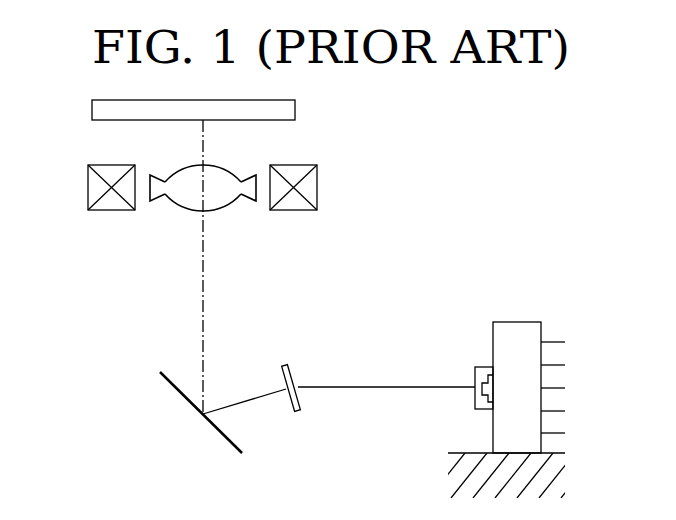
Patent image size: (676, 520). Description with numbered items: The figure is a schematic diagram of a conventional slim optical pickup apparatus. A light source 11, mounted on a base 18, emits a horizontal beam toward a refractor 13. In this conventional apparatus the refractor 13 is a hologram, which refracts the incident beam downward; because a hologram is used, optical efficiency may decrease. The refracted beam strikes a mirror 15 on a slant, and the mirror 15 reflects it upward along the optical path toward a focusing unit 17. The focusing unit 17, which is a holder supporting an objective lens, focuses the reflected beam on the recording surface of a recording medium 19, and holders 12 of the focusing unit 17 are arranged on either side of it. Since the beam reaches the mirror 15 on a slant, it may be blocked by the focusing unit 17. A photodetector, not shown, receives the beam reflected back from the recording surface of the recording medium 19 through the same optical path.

The light source 11 is at (518, 322).
The holders 12 is at (88, 187).
The refractor 13 is at (293, 372).
The mirror 15 is at (191, 408).
The focusing unit 17 is at (222, 168).
The base 18 is at (478, 460).
The recording medium 19 is at (223, 112).